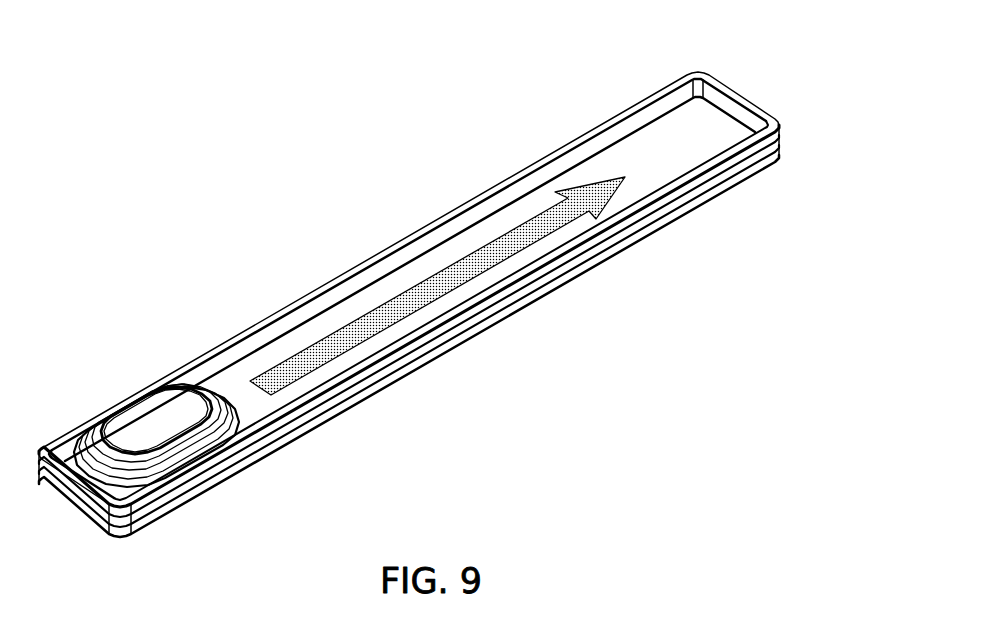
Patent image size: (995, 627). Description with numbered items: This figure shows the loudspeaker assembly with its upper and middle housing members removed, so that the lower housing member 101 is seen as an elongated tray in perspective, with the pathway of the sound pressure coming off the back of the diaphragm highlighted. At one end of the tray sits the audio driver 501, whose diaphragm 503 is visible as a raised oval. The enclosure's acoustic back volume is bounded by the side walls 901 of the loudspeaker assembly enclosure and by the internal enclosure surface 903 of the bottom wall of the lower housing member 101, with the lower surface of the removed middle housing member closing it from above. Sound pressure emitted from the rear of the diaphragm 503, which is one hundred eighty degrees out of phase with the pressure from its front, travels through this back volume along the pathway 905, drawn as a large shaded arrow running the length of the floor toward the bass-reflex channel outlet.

The lower housing member 101 is at (506, 176).
The audio driver 501 is at (409, 287).
The diaphragm 503 is at (175, 403).
The side walls 901 is at (588, 145).
The internal enclosure surface 903 is at (680, 169).
The pathway 905 is at (457, 287).